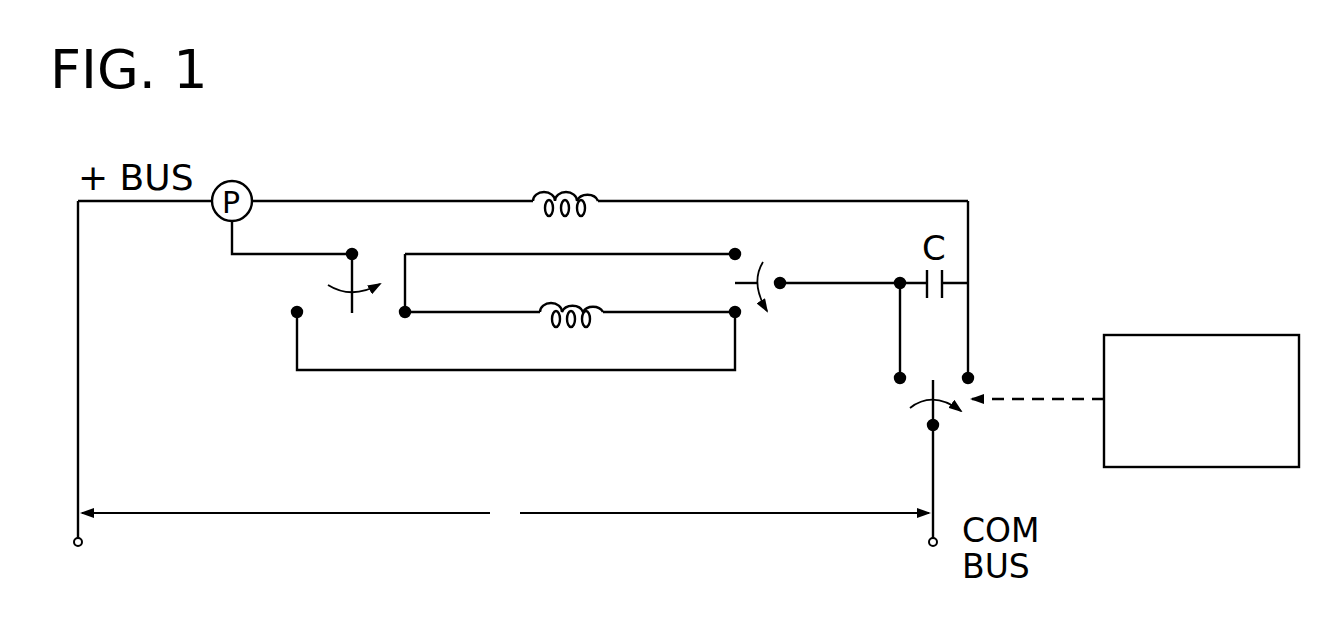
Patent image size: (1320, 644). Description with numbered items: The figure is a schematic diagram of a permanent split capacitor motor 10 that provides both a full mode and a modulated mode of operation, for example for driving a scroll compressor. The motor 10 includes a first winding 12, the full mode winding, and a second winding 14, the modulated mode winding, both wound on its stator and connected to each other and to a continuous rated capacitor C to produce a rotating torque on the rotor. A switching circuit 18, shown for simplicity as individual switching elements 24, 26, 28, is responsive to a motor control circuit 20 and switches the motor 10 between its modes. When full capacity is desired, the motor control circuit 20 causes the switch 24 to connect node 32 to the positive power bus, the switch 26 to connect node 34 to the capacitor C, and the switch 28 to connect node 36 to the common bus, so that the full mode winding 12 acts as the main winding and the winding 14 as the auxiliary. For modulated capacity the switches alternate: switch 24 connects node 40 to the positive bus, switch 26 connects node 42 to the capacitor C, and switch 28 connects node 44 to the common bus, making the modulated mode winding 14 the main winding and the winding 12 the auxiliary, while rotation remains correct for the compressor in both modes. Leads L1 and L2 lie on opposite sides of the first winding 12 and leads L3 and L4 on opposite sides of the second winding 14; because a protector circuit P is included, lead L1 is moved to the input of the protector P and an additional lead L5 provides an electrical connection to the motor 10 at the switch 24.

The PSC motor 10 is at (281, 550).
The first winding 12 is at (597, 192).
The second winding 14 is at (573, 327).
The switching circuit 18 is at (288, 290).
The motor control circuit 20 is at (1253, 335).
The switch 24 is at (352, 277).
The switch 26 is at (770, 280).
The switch 28 is at (933, 425).
The node 32 is at (405, 312).
The node 34 is at (735, 312).
The node 36 is at (968, 378).
The node 40 is at (297, 312).
The node 42 is at (735, 254).
The node 44 is at (900, 378).
The lead L1 is at (427, 200).
The lead L2 is at (760, 201).
The lead L3 is at (512, 312).
The lead L4 is at (633, 310).
The lead L5 is at (295, 253).